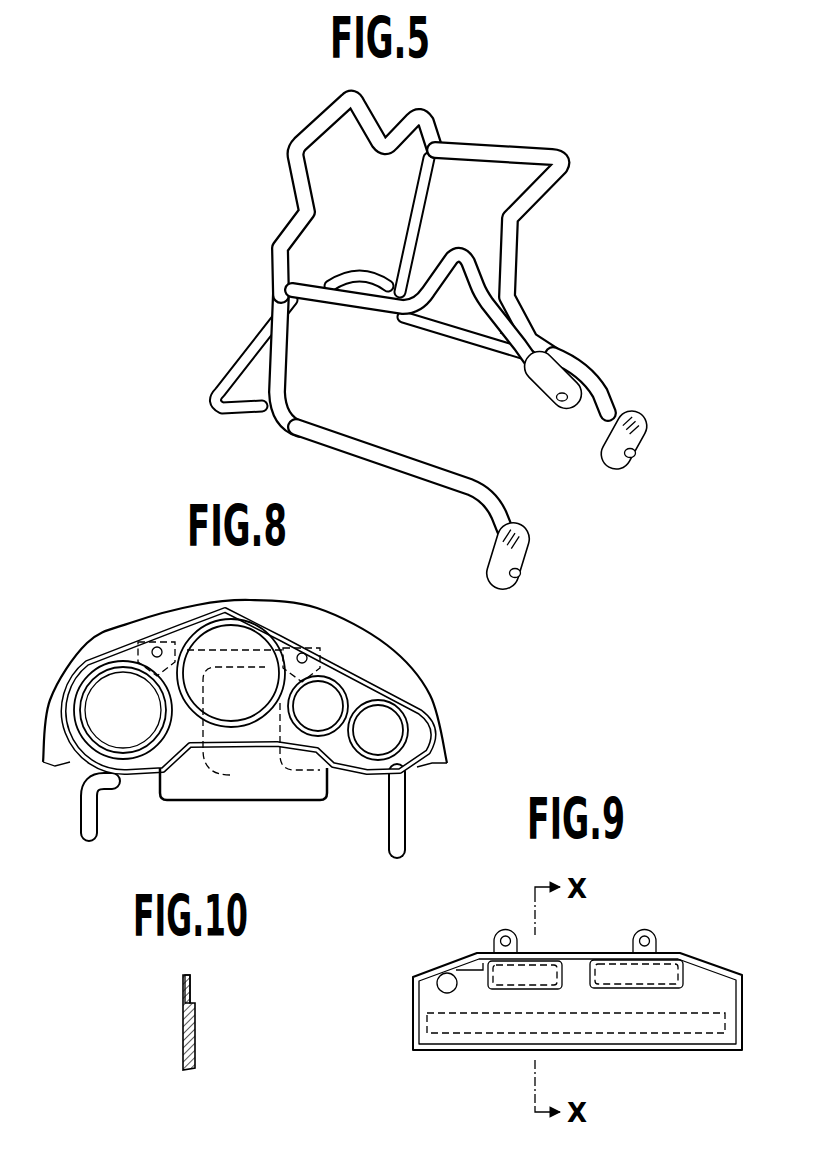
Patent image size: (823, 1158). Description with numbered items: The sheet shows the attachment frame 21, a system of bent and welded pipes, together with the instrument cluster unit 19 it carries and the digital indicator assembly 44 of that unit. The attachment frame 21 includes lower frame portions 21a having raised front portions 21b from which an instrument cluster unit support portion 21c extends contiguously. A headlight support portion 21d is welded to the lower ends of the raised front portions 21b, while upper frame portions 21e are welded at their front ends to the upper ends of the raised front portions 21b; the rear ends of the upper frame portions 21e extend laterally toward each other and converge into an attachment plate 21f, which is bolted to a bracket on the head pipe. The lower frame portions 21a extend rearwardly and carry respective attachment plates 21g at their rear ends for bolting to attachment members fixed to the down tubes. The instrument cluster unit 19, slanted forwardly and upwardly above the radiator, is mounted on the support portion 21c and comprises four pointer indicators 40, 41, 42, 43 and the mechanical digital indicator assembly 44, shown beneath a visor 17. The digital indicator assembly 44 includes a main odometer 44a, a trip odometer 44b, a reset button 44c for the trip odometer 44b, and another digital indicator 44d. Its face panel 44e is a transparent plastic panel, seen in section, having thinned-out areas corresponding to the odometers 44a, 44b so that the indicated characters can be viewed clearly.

In FIG. 8, the meter visor 17 is at (318, 608).
In FIG. 8, the instrument cluster unit 19 is at (367, 683).
In FIG. 5, the attachment frame 21 is at (503, 140).
In FIG. 8, the attachment frame 21 is at (100, 813).
In FIG. 5, the lower frame portions 21a is at (467, 342).
In FIG. 5, the raised front portions 21b is at (410, 227).
In FIG. 5, the instrument cluster unit support portion 21c is at (310, 128).
In FIG. 8, the instrument cluster unit support portion 21c is at (210, 650).
In FIG. 5, the headlight support portion 21d is at (227, 383).
In FIG. 5, the upper frame portions 21e is at (551, 152).
In FIG. 5, the attachment plate 21f is at (541, 392).
In FIG. 5, the attachment plates 21g is at (627, 427).
In FIG. 8, the pointer indicator 40 is at (110, 677).
In FIG. 8, the pointer indicator 41 is at (230, 630).
In FIG. 8, the pointer indicator 42 is at (327, 687).
In FIG. 8, the pointer indicator 43 is at (397, 727).
In FIG. 8, the mechanical digital indicator assembly 44 is at (203, 790).
In FIG. 9, the mechanical digital indicator assembly 44 is at (693, 958).
In FIG. 9, the main odometer 44a is at (610, 963).
In FIG. 9, the trip odometer 44b is at (557, 967).
In FIG. 10, the trip odometer 44b is at (190, 992).
In FIG. 9, the reset button 44c is at (447, 977).
In FIG. 9, the digital indicator 44d is at (500, 1033).
In FIG. 9, the face panel 44e is at (580, 965).
In FIG. 10, the face panel 44e is at (194, 1032).